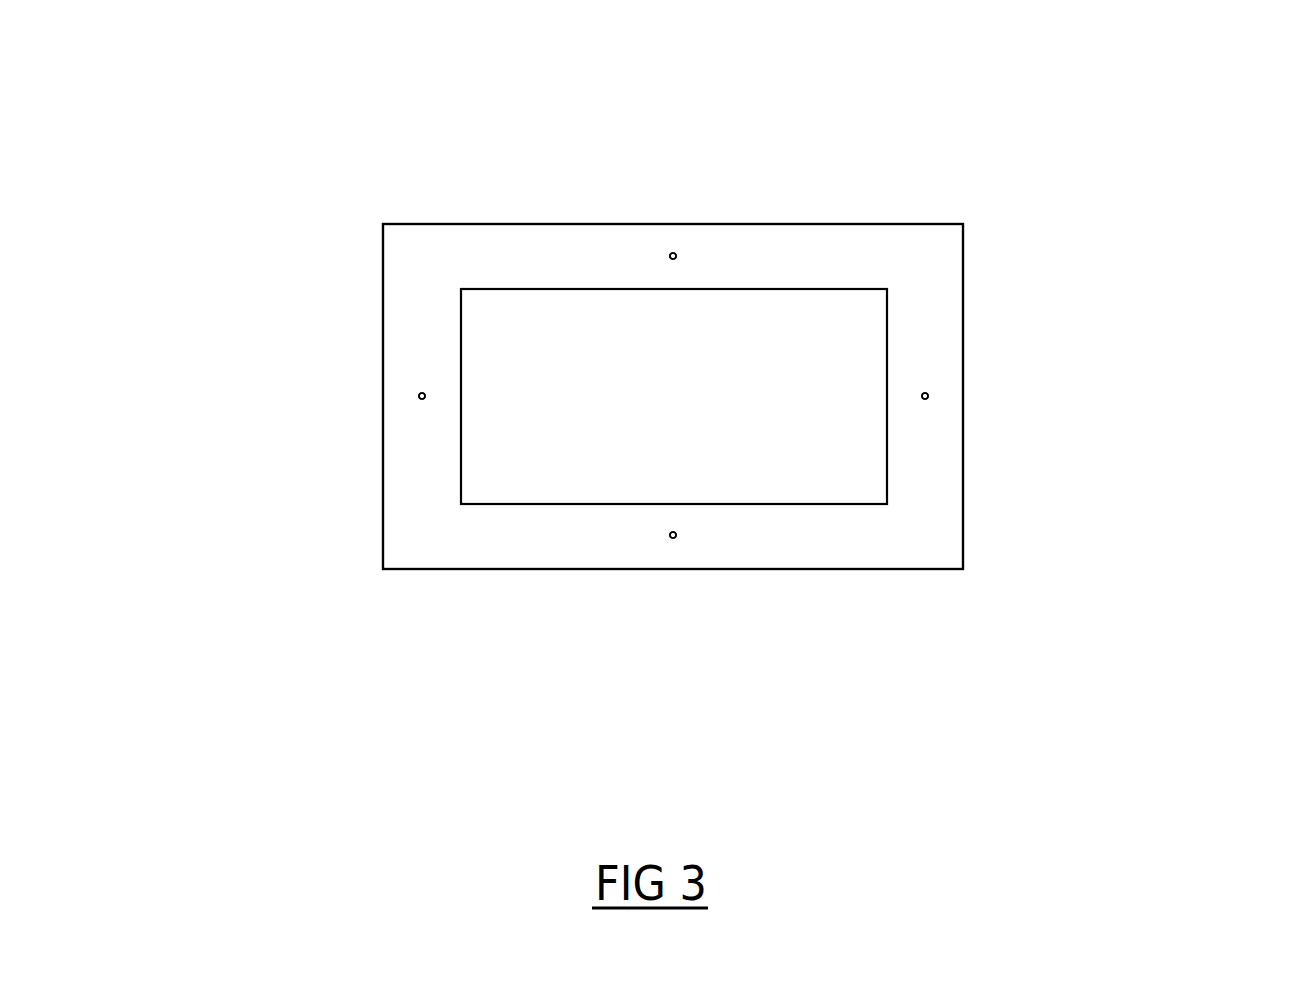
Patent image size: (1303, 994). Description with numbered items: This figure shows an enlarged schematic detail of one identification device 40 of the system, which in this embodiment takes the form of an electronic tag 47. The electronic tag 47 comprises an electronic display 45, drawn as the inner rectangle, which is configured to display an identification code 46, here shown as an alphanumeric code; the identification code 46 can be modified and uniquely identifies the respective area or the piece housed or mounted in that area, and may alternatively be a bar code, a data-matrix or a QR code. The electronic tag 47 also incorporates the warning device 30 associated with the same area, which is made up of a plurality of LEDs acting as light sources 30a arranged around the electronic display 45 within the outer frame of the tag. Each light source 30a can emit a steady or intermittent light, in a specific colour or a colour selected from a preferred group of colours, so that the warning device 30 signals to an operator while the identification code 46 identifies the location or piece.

The warning device 30 is at (676, 253).
The light source 30a is at (673, 395).
The identification device 40 is at (415, 153).
The electronic display 45 is at (848, 288).
The identification code 46 is at (562, 428).
The electronic tag 47 is at (673, 396).